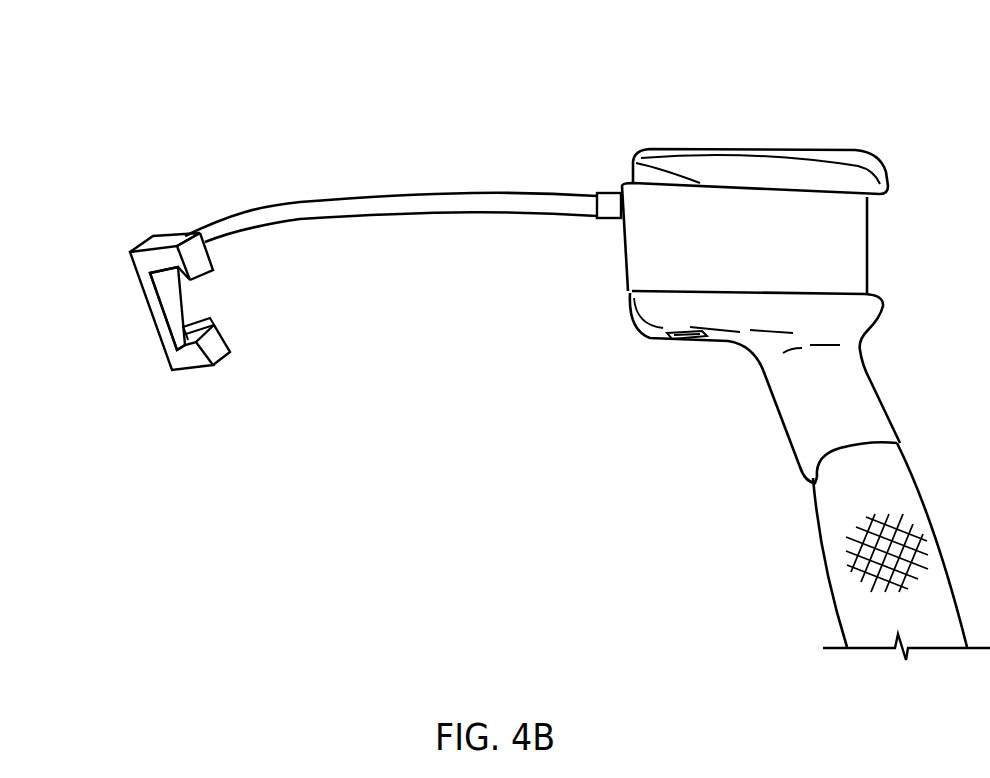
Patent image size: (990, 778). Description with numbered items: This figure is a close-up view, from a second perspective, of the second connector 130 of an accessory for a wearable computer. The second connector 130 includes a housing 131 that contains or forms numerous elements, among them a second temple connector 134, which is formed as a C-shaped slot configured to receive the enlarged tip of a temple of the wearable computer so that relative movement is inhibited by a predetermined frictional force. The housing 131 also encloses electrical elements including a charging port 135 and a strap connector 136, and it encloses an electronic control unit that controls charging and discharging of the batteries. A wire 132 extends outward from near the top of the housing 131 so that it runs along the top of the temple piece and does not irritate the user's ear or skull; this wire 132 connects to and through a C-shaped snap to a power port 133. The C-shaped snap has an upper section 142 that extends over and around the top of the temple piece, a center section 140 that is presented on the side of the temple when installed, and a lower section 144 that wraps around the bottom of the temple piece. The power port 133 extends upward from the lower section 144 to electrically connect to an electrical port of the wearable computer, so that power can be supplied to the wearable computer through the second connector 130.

The second connector 130 is at (824, 94).
The housing 131 is at (874, 165).
The wire 132 is at (422, 193).
The power port 133 is at (210, 318).
The second temple connector 134 is at (628, 180).
The charging port 135 is at (683, 341).
The strap connector 136 is at (878, 388).
The center section 140 is at (150, 312).
The upper section 142 is at (163, 238).
The lower section 144 is at (190, 370).